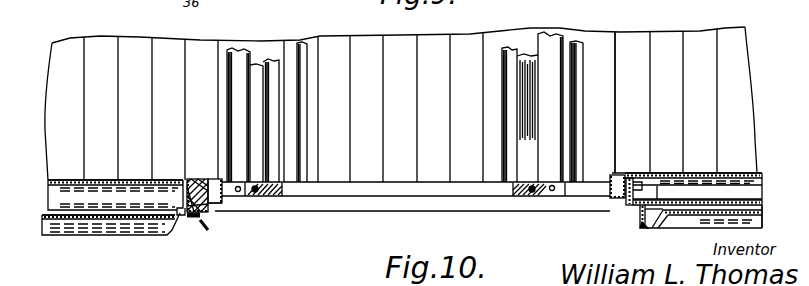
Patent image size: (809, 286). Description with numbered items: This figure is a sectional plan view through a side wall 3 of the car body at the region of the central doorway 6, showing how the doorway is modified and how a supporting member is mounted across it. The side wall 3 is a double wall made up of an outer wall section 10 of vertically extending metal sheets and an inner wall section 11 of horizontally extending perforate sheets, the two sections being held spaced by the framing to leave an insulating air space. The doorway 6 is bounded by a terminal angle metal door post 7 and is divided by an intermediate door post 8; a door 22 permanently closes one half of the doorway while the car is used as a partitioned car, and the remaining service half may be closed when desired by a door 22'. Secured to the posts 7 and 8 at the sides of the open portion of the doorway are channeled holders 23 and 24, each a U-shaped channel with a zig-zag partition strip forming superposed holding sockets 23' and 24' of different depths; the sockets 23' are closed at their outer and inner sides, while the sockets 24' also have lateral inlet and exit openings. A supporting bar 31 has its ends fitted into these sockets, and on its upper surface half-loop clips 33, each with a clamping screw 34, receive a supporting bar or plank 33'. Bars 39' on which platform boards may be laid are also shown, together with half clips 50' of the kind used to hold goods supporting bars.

The central doorway 6 is at (401, 104).
The supporting bar or plank 33' is at (395, 94).
The slat strip 50' is at (393, 114).
The bars 39' is at (452, 111).
The bar 31 is at (410, 188).
The L-shaped or half-loop clips 33 is at (405, 209).
The clamping screw 34 is at (268, 195).
The side walls 3 is at (409, 200).
The inner wall section 11 is at (70, 180).
The door 22 is at (111, 239).
The outer wall section 10 is at (152, 216).
The channeled holder 23 is at (204, 172).
The holding sockets 23' is at (239, 223).
The intermediate door post 8 is at (207, 215).
The holding sockets 24' is at (597, 202).
The channeled holder 24 is at (618, 210).
The terminal angle metal door post 7 is at (630, 102).
The door 22' is at (701, 227).